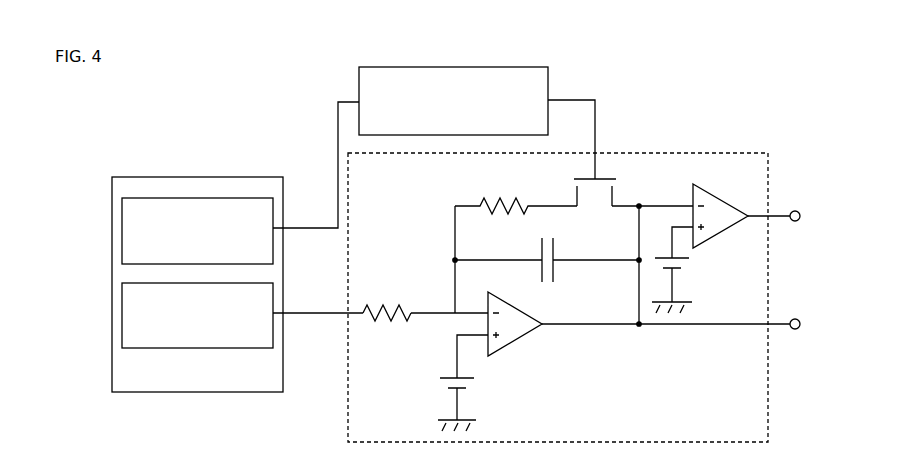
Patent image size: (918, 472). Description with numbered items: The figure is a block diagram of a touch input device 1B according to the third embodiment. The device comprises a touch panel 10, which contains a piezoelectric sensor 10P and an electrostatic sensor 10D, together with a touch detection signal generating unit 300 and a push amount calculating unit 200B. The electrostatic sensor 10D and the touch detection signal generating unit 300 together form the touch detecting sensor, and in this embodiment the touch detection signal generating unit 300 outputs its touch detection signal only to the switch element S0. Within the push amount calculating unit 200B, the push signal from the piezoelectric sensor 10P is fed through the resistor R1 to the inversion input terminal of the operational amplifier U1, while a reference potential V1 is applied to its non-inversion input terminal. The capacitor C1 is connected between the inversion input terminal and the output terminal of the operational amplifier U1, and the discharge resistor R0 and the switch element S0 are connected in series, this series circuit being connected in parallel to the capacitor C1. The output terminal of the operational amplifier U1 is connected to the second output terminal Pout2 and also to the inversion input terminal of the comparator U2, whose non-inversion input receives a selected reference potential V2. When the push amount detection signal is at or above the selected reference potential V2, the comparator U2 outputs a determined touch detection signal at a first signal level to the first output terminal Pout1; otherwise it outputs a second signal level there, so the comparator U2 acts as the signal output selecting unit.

The touch input device 1B is at (711, 44).
The touch panel 10 is at (242, 176).
The electrostatic sensor 10D is at (274, 207).
The piezoelectric sensor 10P is at (274, 297).
The touch detection signal generating unit 300 is at (503, 67).
The push amount calculating unit 200B is at (745, 140).
The discharge resistor R0 is at (516, 193).
The resistor R1 is at (387, 302).
The capacitor C1 is at (547, 256).
The switch element S0 is at (612, 190).
The operational amplifier U1 is at (563, 327).
The comparator U2 is at (714, 214).
The reference potential V1 is at (468, 383).
The selected reference potential V2 is at (682, 270).
The first output terminal Pout1 is at (801, 209).
The second output terminal Pout2 is at (801, 317).